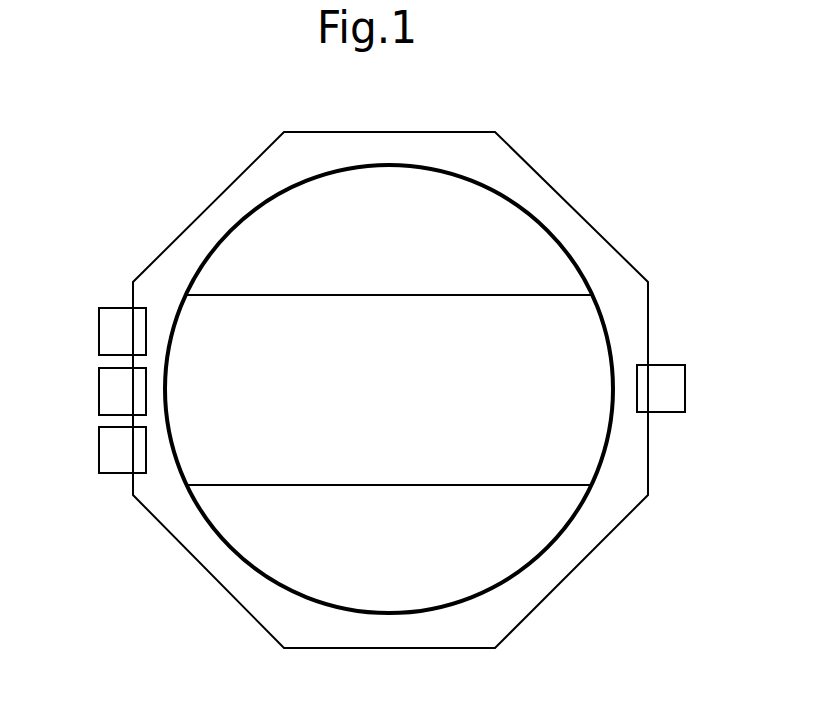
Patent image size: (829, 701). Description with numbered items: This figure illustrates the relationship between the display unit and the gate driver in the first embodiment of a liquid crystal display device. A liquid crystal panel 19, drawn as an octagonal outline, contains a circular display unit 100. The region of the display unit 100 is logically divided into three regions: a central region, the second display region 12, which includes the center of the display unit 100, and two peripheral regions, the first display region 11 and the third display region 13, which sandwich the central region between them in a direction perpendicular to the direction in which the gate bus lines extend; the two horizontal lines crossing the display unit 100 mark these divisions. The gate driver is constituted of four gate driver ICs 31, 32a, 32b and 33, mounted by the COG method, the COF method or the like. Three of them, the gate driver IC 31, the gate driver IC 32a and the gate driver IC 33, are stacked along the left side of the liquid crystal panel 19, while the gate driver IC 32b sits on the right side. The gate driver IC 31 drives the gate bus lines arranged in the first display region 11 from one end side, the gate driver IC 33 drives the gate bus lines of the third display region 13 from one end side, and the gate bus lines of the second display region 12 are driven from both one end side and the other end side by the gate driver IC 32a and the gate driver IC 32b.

The liquid crystal panel 19 is at (392, 131).
The display unit 100 is at (392, 165).
The first display region 11 is at (473, 232).
The second display region 12 is at (540, 332).
The third display region 13 is at (473, 547).
The gate driver IC 31 is at (98, 338).
The gate driver IC 32a is at (98, 397).
The gate driver IC 32b is at (688, 387).
The gate driver IC 33 is at (98, 453).